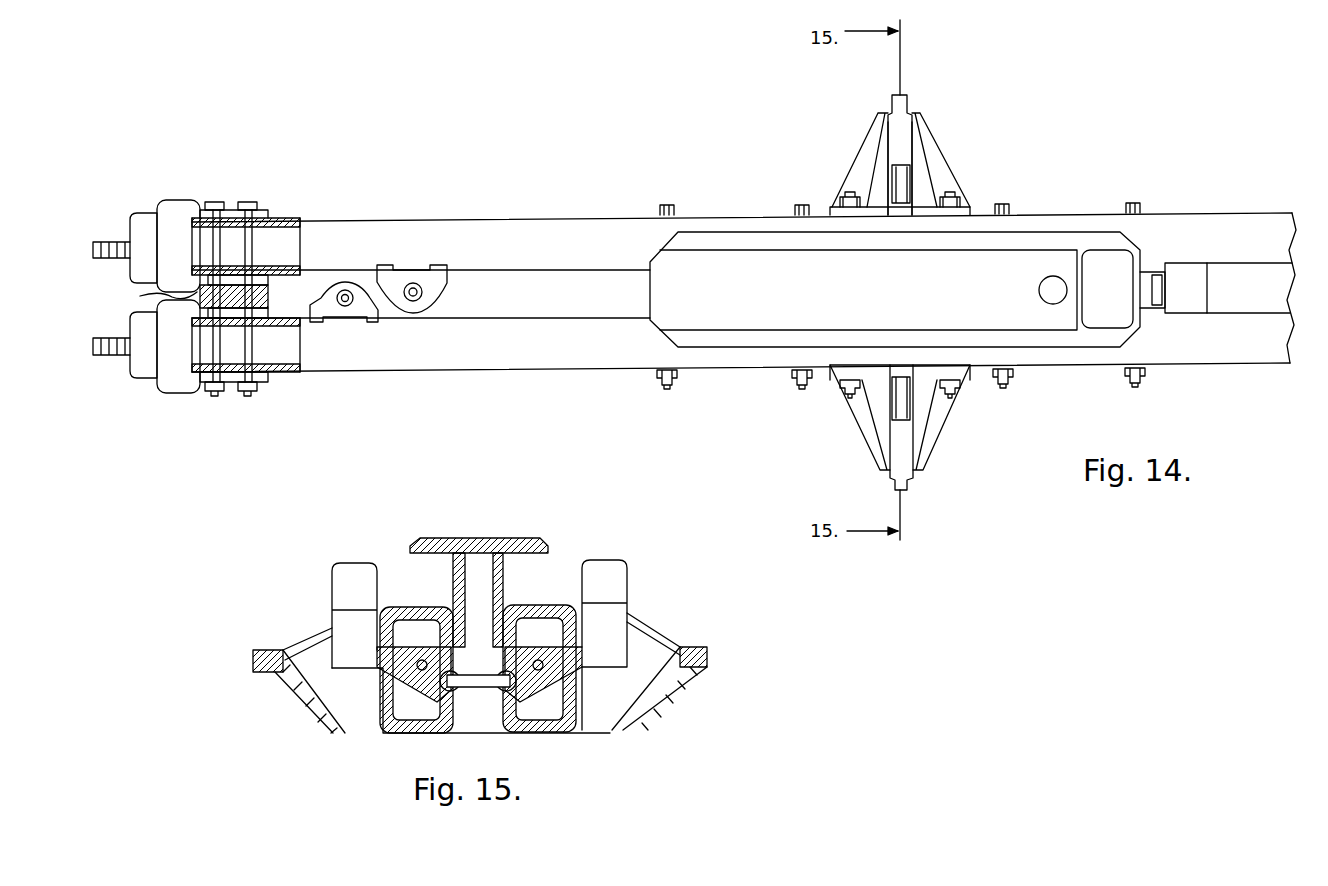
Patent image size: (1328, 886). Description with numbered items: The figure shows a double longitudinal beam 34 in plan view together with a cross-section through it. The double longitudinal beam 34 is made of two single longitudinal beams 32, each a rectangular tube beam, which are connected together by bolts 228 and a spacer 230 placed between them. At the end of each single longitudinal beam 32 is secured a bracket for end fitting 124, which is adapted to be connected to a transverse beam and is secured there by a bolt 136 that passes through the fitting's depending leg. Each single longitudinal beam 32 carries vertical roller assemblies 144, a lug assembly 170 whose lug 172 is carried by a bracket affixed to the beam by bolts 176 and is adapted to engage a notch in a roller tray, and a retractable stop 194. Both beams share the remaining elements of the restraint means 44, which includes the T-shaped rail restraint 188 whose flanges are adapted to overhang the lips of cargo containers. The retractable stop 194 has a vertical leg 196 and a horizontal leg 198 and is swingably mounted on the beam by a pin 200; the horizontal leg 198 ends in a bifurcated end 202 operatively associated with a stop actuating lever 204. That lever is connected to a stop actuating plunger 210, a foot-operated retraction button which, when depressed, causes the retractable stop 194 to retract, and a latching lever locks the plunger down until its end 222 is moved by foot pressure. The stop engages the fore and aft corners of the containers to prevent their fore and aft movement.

In FIG. 14, the single longitudinal beam 32 is at (455, 222).
In FIG. 15, the single longitudinal beam 32 is at (407, 733).
In FIG. 14, the double longitudinal beam 34 is at (548, 212).
In FIG. 15, the double longitudinal beam 34 is at (550, 730).
In FIG. 14, the restraint means 44 is at (765, 372).
In FIG. 15, the restraint means 44 is at (667, 585).
In FIG. 14, the bracket for end fitting 124 is at (178, 200).
In FIG. 14, the bolt 136 is at (100, 242).
In FIG. 14, the vertical roller assembly 144 is at (423, 295).
In FIG. 14, the lug assembly 170 is at (833, 180).
In FIG. 14, the lug 172 is at (905, 108).
In FIG. 15, the lug 172 is at (270, 650).
In FIG. 14, the bolt 176 is at (952, 189).
In FIG. 14, the rail restraint 188 is at (784, 294).
In FIG. 15, the rail restraint 188 is at (477, 532).
In FIG. 14, the retractable stop 194 is at (904, 182).
In FIG. 15, the retractable stop 194 is at (357, 562).
In FIG. 15, the vertical leg 196 is at (330, 623).
In FIG. 15, the horizontal leg 198 is at (385, 670).
In FIG. 15, the pin 200 is at (422, 659).
In FIG. 15, the bifurcated end 202 is at (504, 698).
In FIG. 15, the stop actuating lever 204 is at (475, 690).
In FIG. 14, the stop actuating plunger 210 is at (1058, 302).
In FIG. 14, the end of latching lever 222 is at (1195, 262).
In FIG. 14, the bolt 228 is at (238, 235).
In FIG. 14, the spacer 230 is at (140, 296).